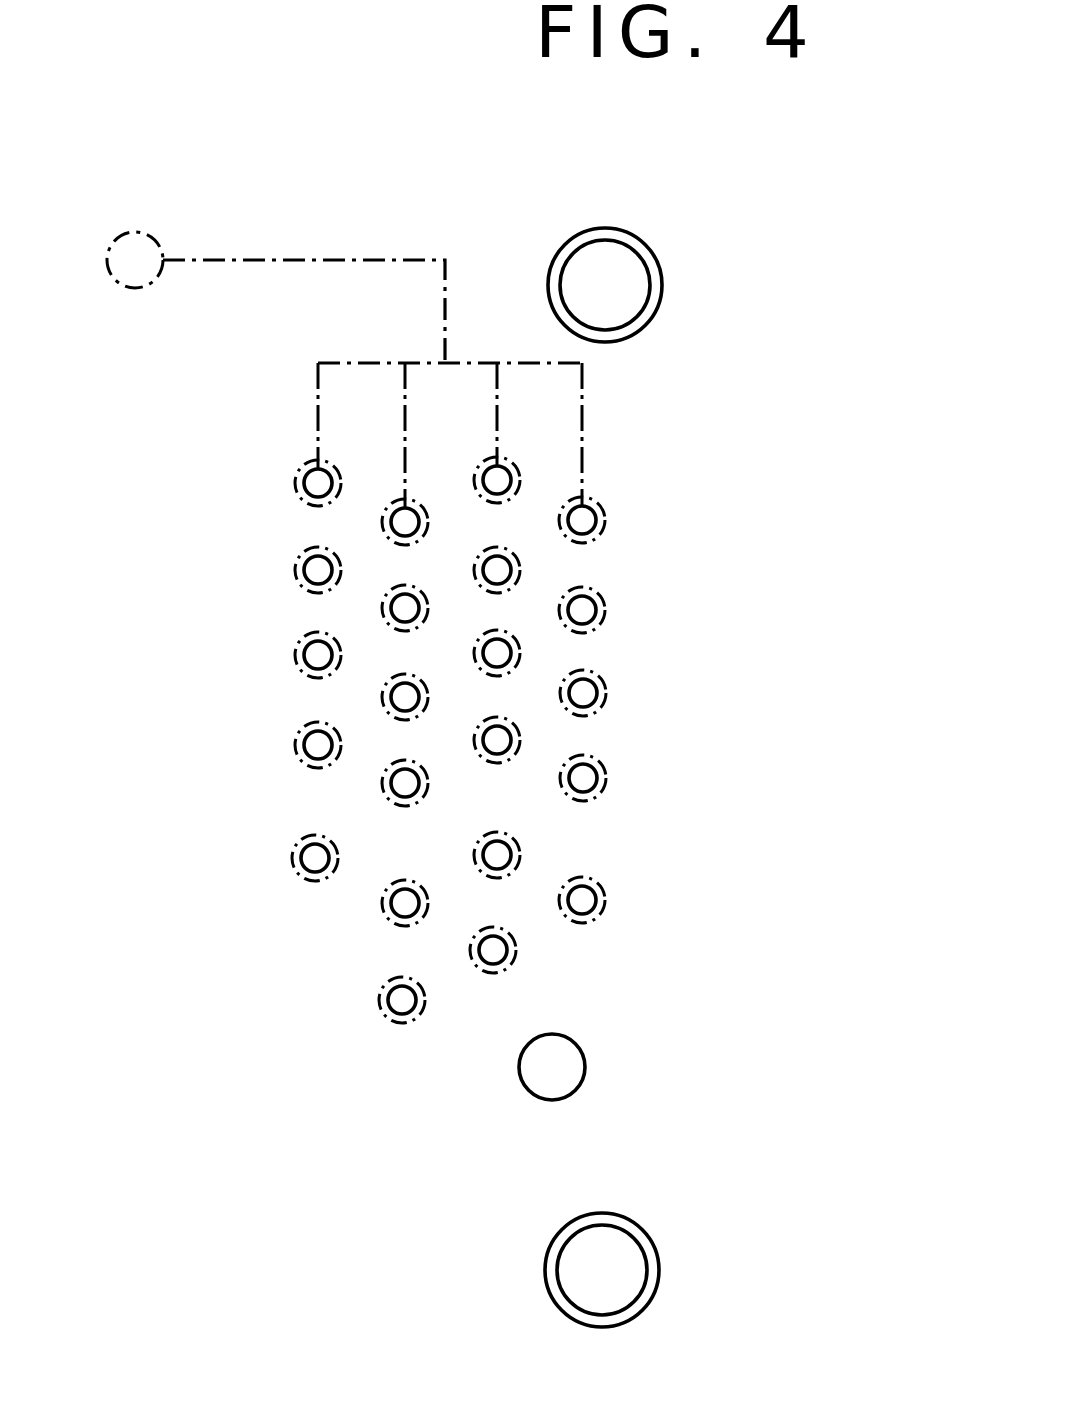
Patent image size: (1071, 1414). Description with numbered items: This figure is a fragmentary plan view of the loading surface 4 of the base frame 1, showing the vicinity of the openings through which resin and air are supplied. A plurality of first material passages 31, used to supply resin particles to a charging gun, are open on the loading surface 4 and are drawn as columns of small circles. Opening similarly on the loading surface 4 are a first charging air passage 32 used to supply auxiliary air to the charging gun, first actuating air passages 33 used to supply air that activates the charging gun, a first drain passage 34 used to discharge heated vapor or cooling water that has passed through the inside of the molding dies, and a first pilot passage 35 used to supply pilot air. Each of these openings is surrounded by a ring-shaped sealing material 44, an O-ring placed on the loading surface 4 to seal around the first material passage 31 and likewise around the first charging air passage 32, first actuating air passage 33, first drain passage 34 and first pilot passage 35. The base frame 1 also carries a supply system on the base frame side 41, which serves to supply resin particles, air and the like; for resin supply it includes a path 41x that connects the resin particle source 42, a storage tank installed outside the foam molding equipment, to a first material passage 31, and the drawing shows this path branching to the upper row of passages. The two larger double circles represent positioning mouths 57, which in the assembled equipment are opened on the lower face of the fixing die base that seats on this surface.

The base frame 1 is at (598, 444).
The loading surface 4 is at (140, 1100).
The first material passage 31 is at (312, 480).
The first charging air passage 32 is at (312, 860).
The first actuating air passage 33 is at (402, 905).
The first drain passage 34 is at (548, 1076).
The first pilot passage 35 is at (497, 950).
The supply system on the base frame side 41 is at (243, 260).
The path 41x is at (326, 358).
The resin particle source 42 is at (133, 290).
The sealing material 44 is at (340, 470).
The positioning mouth 57 is at (618, 282).